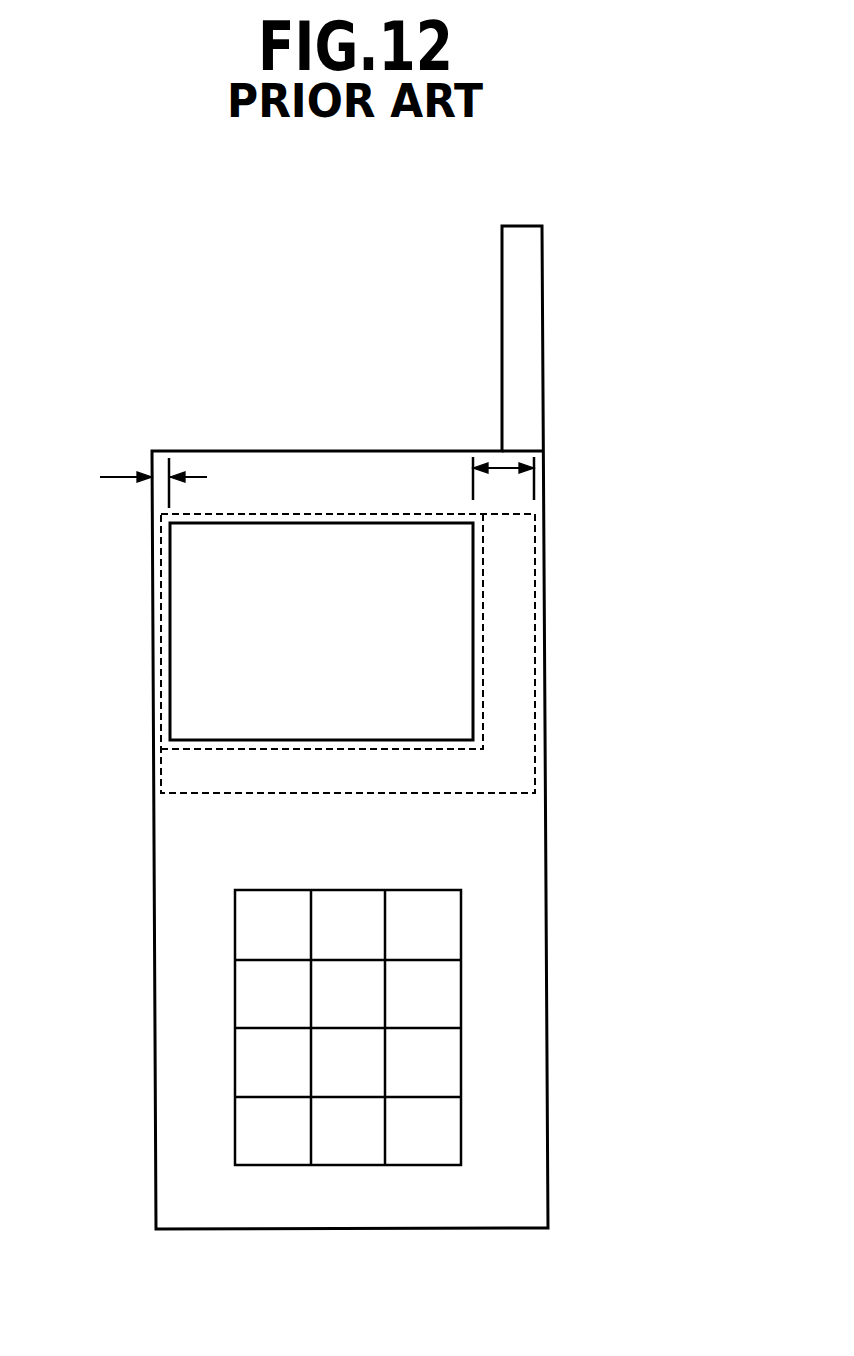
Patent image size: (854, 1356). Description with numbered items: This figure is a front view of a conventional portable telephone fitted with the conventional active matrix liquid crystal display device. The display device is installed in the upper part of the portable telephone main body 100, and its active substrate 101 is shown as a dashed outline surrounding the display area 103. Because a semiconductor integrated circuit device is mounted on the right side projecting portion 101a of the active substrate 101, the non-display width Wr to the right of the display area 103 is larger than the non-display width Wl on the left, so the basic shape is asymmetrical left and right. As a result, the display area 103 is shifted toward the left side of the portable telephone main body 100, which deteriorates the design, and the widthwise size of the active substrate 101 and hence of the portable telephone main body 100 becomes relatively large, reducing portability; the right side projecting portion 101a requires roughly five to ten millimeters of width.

The portable telephone main body 100 is at (548, 893).
The active substrate 101 is at (536, 566).
The right side projecting portion 101a is at (530, 717).
The display area 103 is at (210, 654).